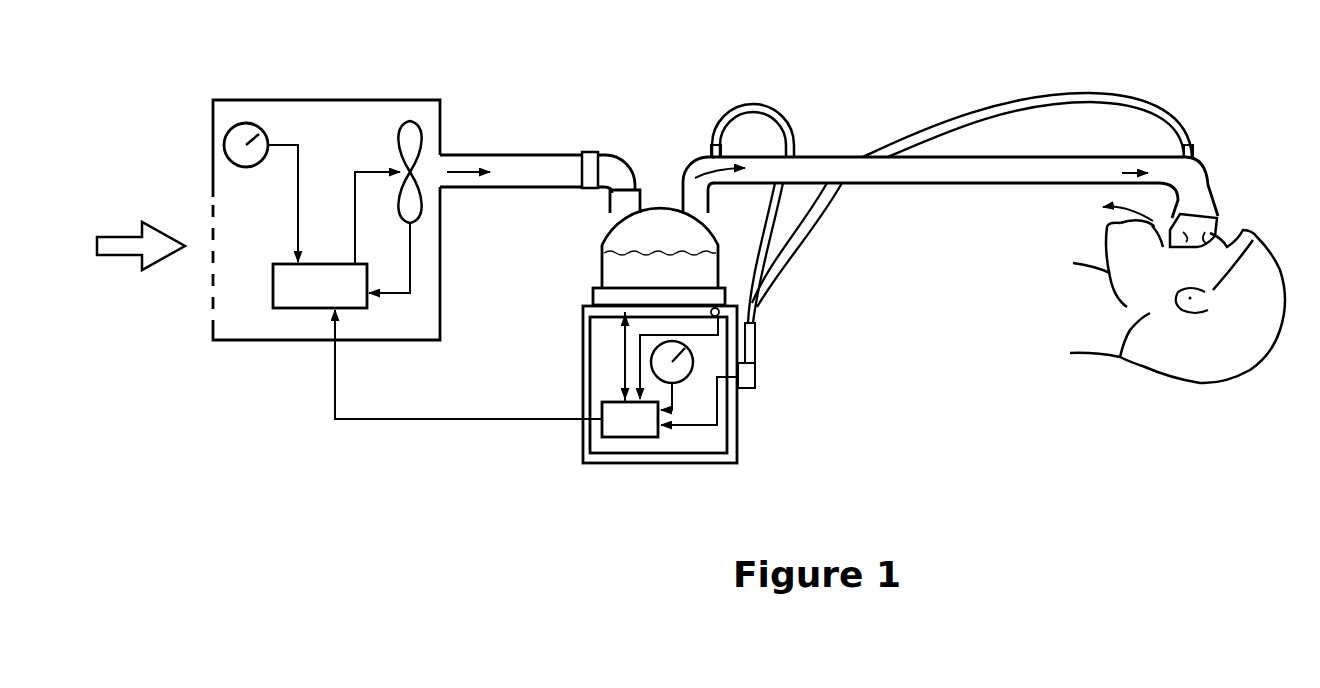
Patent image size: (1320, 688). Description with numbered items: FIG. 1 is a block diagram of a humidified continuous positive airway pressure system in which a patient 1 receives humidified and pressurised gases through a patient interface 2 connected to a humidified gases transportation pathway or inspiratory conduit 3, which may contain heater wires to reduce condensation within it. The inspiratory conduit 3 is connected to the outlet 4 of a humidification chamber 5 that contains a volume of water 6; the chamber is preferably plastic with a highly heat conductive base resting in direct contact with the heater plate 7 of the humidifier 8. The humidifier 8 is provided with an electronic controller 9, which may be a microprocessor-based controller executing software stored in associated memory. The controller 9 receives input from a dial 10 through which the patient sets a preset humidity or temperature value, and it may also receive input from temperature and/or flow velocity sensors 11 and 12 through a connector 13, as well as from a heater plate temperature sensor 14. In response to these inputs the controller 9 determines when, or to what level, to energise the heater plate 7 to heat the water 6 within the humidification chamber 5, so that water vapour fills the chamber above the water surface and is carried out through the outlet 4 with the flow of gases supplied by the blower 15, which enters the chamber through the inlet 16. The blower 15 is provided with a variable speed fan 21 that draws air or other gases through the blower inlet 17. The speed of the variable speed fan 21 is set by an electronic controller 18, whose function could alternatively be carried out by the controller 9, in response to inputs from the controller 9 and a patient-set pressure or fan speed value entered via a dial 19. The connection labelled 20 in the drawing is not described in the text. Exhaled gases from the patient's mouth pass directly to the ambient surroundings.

The patient 1 is at (1155, 372).
The patient interface 2 is at (1218, 216).
The inspiratory conduit 3 is at (960, 185).
The outlet 4 is at (686, 188).
The humidification chamber 5 is at (603, 243).
The water 6 is at (660, 269).
The heater plate 7 is at (593, 293).
The humidifier 8 is at (585, 373).
The electronic controller 9 is at (630, 419).
The dial 10 is at (683, 385).
The temperature and/or flow velocity sensor 11 is at (1197, 152).
The temperature and/or flow velocity sensor 12 is at (712, 143).
The connector 13 is at (756, 387).
The heater plate temperature sensor 14 is at (720, 313).
The blower 15 is at (323, 100).
The inlet 16 is at (613, 208).
The blower inlet 17 is at (208, 287).
The electronic controller 18 is at (290, 310).
The dial 19 is at (248, 121).
The fan motor connection 20 is at (410, 282).
The variable speed fan 21 is at (407, 117).